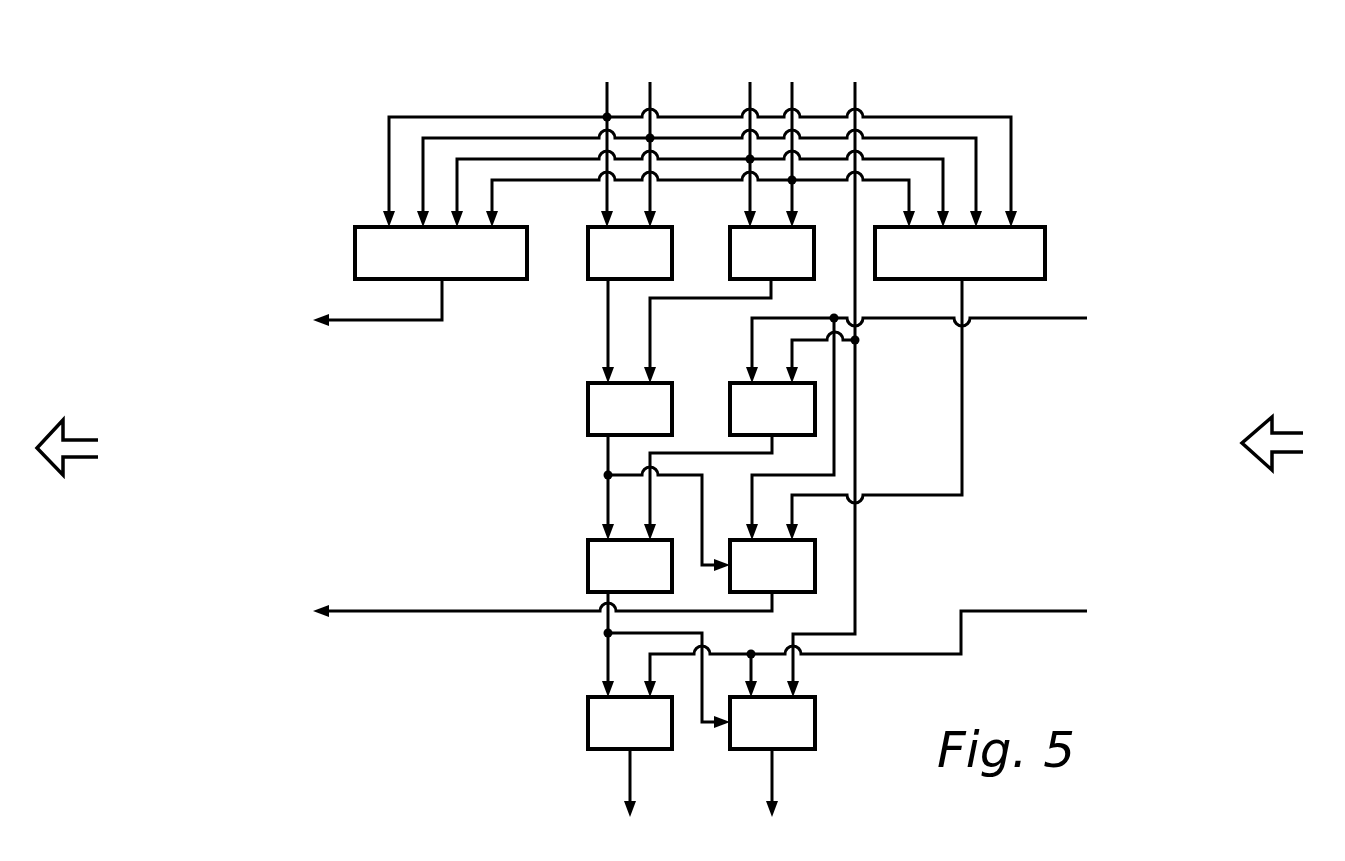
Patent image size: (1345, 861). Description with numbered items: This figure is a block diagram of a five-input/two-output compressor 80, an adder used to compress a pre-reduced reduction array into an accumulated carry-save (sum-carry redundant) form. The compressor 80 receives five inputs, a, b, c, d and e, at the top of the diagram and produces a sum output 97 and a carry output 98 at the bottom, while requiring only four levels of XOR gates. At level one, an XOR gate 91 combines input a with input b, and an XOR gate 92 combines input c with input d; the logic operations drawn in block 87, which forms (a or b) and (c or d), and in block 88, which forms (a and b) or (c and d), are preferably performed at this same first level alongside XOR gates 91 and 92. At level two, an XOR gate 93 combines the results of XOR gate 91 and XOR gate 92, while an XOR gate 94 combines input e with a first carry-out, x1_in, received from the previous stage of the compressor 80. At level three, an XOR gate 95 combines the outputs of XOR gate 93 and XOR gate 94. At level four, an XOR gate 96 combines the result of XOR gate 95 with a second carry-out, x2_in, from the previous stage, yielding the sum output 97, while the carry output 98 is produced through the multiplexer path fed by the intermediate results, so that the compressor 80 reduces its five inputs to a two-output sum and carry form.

The five-input/two-output compressor 80 is at (1092, 66).
The logic block 87 is at (355, 249).
The logic block 88 is at (1045, 247).
The XOR gate 91 is at (588, 250).
The XOR gate 92 is at (730, 232).
The XOR gate 93 is at (588, 406).
The XOR gate 94 is at (730, 388).
The XOR gate 95 is at (588, 562).
The XOR gate 96 is at (588, 718).
The sum output 97 is at (630, 787).
The carry output 98 is at (772, 787).